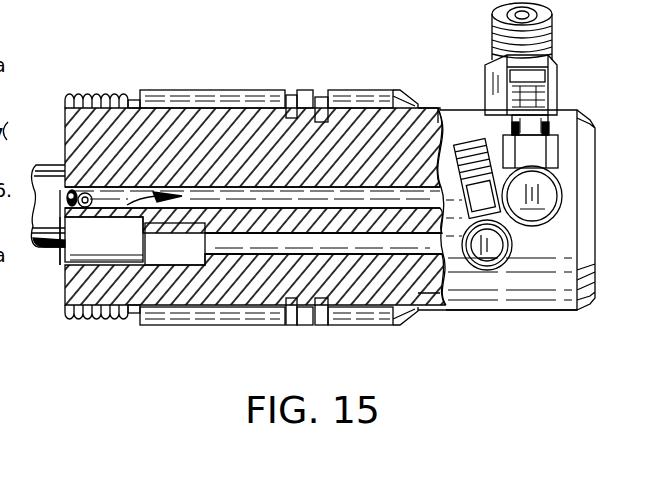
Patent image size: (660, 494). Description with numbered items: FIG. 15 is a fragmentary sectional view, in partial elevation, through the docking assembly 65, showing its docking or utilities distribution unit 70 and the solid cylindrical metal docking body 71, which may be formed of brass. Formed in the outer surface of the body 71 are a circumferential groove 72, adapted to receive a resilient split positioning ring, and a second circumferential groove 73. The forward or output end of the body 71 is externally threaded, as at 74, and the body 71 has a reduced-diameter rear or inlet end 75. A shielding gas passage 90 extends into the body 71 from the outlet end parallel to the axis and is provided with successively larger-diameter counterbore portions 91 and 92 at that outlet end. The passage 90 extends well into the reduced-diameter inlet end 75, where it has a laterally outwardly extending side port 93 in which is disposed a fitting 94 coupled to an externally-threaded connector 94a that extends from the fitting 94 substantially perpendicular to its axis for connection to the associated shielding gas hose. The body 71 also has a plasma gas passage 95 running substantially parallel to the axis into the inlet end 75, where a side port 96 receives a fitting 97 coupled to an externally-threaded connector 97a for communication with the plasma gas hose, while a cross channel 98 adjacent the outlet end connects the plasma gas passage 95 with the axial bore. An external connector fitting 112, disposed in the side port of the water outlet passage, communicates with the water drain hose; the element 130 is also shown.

The docking assembly 65 is at (221, 52).
The docking or utilities distribution unit 70 is at (643, 71).
The docking body 71 is at (346, 326).
The circumferential groove 72 is at (288, 95).
The circumferential groove 73 is at (318, 97).
The external threads 74 is at (86, 93).
The reduced-diameter rear or inlet end 75 is at (514, 312).
The shielding gas passage 90 is at (258, 243).
The counterbore portion 91 is at (170, 257).
The counterbore portion 92 is at (65, 290).
The side port 93 is at (486, 267).
The fitting 94 is at (498, 243).
The externally-threaded connector 94a is at (466, 140).
The plasma gas passage 95 is at (134, 201).
The side port 96 is at (562, 200).
The fitting 97 is at (561, 194).
The externally-threaded connector 97a is at (560, 110).
The cross channel 98 is at (62, 233).
The connector fitting 112 is at (550, 50).
The handle 130 is at (29, 150).